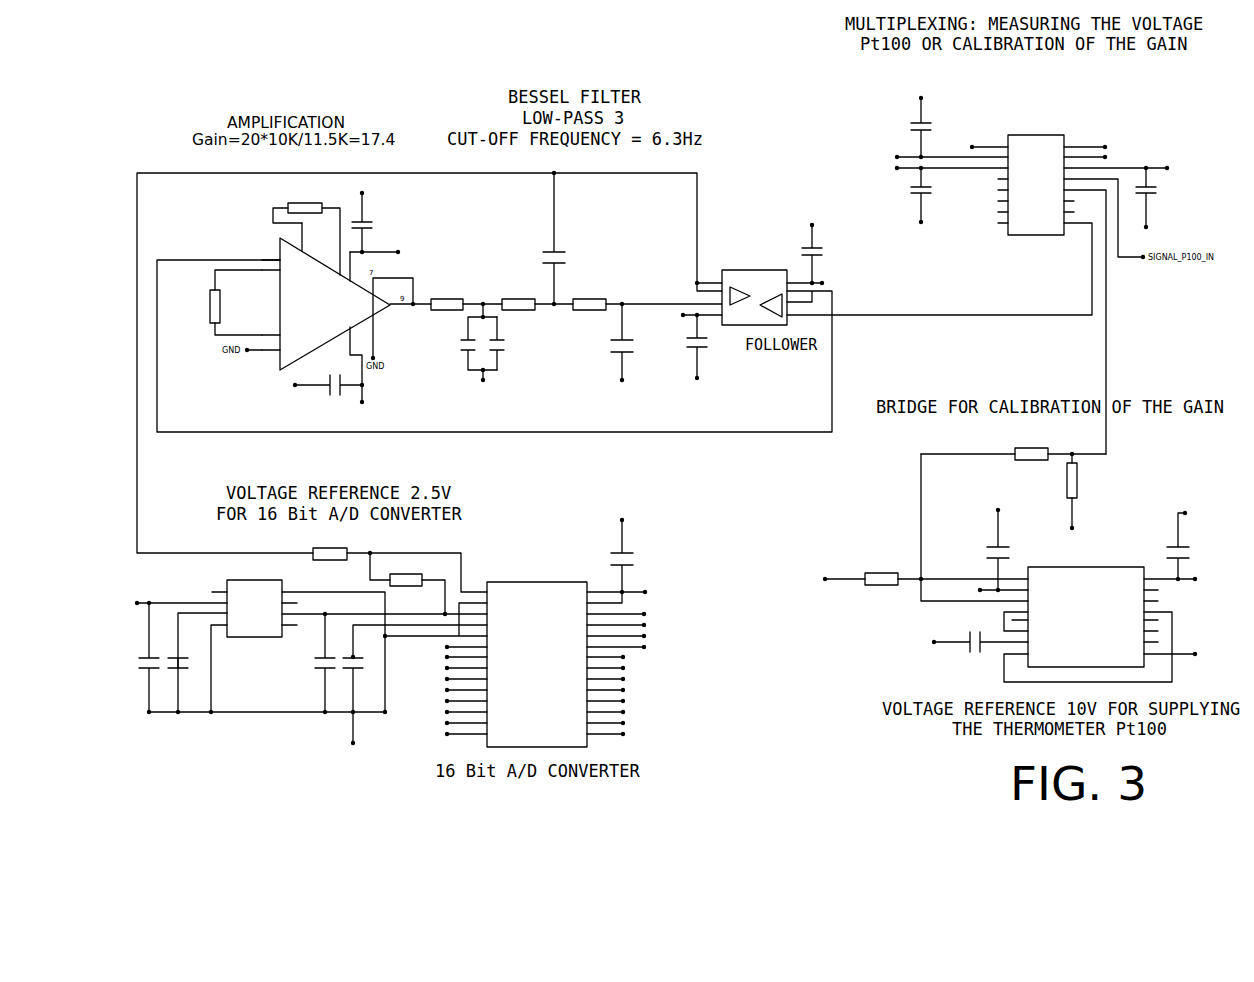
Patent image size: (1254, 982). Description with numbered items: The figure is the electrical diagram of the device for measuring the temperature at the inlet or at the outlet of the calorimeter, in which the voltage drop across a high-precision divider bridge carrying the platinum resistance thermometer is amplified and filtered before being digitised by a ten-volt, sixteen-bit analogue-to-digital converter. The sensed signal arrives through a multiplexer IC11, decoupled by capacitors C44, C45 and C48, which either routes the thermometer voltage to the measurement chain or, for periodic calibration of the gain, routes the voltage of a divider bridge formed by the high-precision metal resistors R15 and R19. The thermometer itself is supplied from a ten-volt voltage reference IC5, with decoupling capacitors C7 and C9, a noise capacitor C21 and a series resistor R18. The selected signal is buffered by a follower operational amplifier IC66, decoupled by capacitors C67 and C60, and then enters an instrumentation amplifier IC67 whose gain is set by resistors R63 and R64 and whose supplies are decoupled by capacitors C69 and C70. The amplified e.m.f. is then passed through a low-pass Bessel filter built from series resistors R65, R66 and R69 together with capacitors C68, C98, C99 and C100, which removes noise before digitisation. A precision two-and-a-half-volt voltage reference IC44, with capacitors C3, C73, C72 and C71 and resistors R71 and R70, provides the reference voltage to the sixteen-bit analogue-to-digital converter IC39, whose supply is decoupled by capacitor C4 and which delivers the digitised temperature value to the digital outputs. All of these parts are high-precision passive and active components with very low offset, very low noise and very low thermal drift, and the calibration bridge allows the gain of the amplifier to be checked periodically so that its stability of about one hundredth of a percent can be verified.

The instrumentation amplifier AMP-01 IC67 is at (305, 312).
The gain resistor 5K R63 is at (236, 302).
The feedback resistor 10K R64 is at (306, 234).
The supply decoupling capacitor 47nF C69 is at (387, 219).
The supply decoupling capacitor 47nF C70 is at (320, 391).
The filter resistor 237K R65 is at (448, 300).
The filter resistor 237K R66 is at (519, 300).
The filter resistor 237K R69 is at (590, 300).
The filter capacitor 33nF C68 is at (478, 349).
The filter capacitor 47nF C98 is at (500, 343).
The filter capacitor 100nF C99 is at (562, 238).
The filter capacitor 47nF C100 is at (613, 349).
The follower operational amplifier AD708 IC66 is at (766, 290).
The decoupling capacitor 100nF C67 is at (825, 250).
The decoupling capacitor 100nF C60 is at (692, 352).
The multiplexer ADG509 IC11 is at (1033, 178).
The decoupling capacitor 100nF C44 is at (929, 122).
The decoupling capacitor 100nF C45 is at (929, 201).
The decoupling capacitor 100nF C48 is at (1154, 203).
The bridge resistor 10K R15 is at (1013, 448).
The bridge resistor 100 ohm R19 is at (1092, 494).
The supply resistor 10K R18 is at (883, 573).
The voltage reference 10V AD688 IC5 is at (1110, 616).
The decoupling capacitor 100nF C7 is at (988, 546).
The decoupling capacitor 100nF C9 is at (1181, 546).
The noise capacitor 1uF C21 is at (965, 648).
The input resistor 200 ohm R71 is at (332, 549).
The resistor 33K R70 is at (406, 575).
The voltage reference 2.5V AD780 IC44 is at (309, 639).
The capacitor 1uF C3 is at (152, 657).
The capacitor 100nF C73 is at (185, 659).
The capacitor 2.2uF C72 is at (312, 663).
The capacitor 2.2uF C71 is at (414, 692).
The 16 bit A/D converter AD976 IC39 is at (566, 656).
The decoupling capacitor 100nF C4 is at (630, 549).